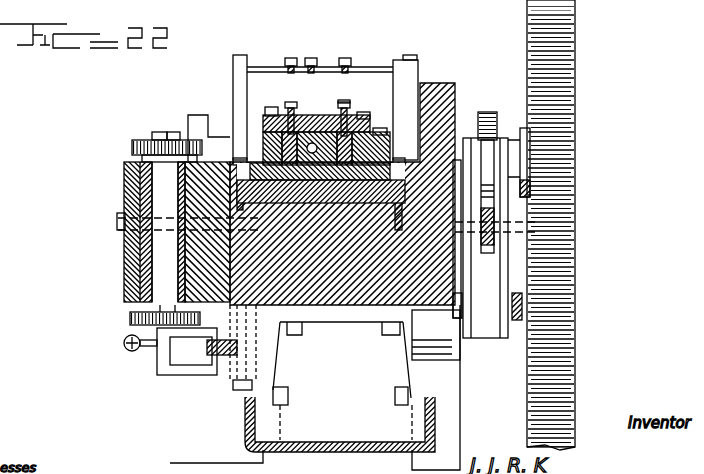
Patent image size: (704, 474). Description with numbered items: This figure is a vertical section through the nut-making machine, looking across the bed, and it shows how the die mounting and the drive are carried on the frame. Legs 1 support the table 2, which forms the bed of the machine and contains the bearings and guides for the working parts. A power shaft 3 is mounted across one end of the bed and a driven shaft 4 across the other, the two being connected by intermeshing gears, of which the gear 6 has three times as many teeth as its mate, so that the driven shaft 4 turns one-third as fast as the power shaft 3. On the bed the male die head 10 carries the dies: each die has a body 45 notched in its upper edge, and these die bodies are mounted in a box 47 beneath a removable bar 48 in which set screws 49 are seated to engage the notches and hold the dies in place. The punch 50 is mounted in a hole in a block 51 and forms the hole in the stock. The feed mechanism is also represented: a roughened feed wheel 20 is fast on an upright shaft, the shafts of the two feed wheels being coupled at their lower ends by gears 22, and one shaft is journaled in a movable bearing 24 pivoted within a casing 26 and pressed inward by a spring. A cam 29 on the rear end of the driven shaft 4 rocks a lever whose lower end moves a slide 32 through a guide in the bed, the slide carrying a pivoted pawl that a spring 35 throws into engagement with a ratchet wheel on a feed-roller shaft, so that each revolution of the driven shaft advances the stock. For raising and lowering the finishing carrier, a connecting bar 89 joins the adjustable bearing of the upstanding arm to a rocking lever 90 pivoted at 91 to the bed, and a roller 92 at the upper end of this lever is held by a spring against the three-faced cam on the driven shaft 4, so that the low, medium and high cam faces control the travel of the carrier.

The legs 1 is at (468, 423).
The table 2 is at (357, 293).
The power shaft 3 is at (215, 355).
The driven shaft 4 is at (518, 140).
The intermeshing gear 6 is at (575, 256).
The male die head 10 is at (322, 85).
The roughened feed wheel 20 is at (132, 150).
The gears 22 is at (128, 318).
The movable bearing 24 is at (125, 262).
The casing 26 is at (125, 185).
The cam 29 is at (197, 118).
The slide 32 is at (180, 362).
The spring 35 is at (124, 350).
The die body 45 is at (306, 116).
The box 47 is at (397, 117).
The removable bar 48 is at (365, 128).
The set screws 49 is at (289, 103).
The punch 50 is at (332, 120).
The block 51 is at (316, 120).
The connecting bar 89 is at (496, 215).
The rocking lever 90 is at (485, 238).
The pivot 91 is at (520, 307).
The roller 92 is at (485, 110).